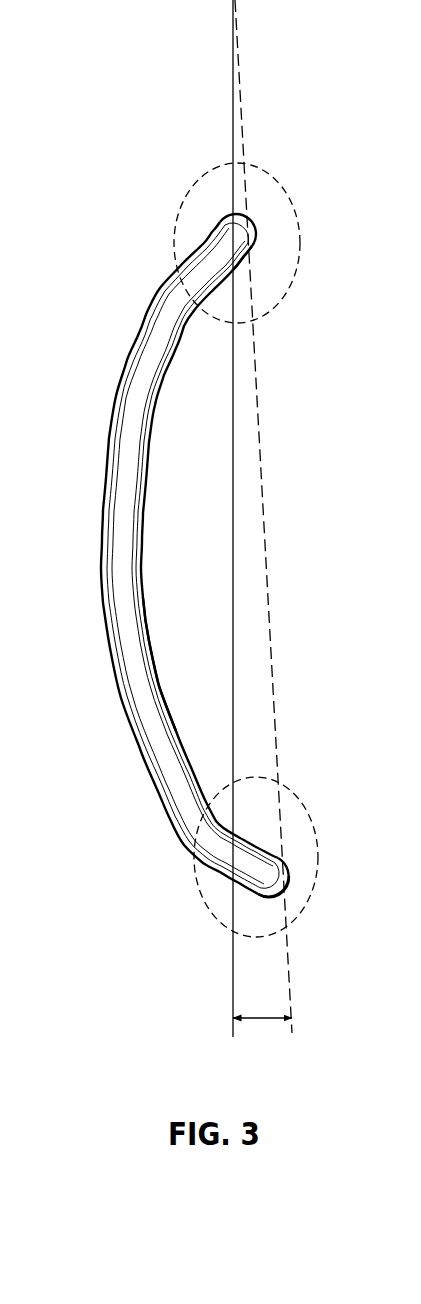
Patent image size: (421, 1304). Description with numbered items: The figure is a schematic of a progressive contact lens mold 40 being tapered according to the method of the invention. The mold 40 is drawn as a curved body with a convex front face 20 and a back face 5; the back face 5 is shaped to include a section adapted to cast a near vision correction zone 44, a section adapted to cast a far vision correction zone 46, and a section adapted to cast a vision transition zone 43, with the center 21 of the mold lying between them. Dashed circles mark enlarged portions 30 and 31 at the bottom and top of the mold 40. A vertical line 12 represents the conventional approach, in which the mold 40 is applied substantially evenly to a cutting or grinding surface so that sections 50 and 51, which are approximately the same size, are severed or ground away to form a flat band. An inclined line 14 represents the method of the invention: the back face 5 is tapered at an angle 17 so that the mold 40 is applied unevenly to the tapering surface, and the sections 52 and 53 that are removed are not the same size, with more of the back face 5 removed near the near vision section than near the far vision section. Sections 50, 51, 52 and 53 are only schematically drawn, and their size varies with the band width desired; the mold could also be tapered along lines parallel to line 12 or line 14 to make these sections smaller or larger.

The back face 5 is at (286, 514).
The line 12 is at (230, 86).
The line 14 is at (241, 92).
The angle 17 is at (262, 1020).
The convex front face 20 is at (115, 693).
The center 21 is at (144, 530).
The enlarged portion 30 is at (420, 783).
The enlarged portion 31 is at (418, 320).
The mold 40 is at (124, 350).
The section adapted to cast a vision transition zone 43 is at (144, 585).
The section adapted to cast a near vision correction zone 44 is at (156, 655).
The section adapted to cast a far vision correction zone 46 is at (153, 437).
The section 50 is at (237, 837).
The section 51 is at (254, 216).
The section 52 is at (287, 890).
The section 53 is at (257, 257).